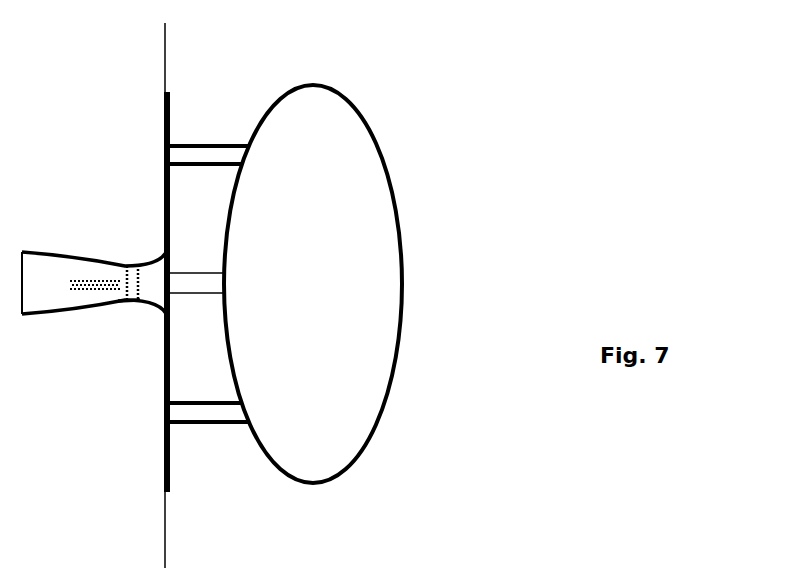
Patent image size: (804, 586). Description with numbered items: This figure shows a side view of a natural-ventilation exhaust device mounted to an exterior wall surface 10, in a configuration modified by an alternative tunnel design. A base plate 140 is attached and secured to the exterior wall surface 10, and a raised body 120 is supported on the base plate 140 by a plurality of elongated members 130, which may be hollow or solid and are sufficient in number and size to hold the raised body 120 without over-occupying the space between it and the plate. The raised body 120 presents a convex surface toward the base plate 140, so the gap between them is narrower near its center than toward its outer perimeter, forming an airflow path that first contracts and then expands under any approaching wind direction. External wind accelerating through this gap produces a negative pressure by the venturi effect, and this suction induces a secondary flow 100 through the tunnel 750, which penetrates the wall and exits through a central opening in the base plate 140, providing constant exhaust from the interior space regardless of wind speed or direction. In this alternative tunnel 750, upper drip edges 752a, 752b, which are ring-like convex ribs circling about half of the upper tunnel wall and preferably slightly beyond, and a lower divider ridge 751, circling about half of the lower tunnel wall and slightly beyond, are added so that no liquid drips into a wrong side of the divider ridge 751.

The exterior wall surface 10 is at (171, 51).
The secondary flow 100 is at (116, 290).
The raised body 120 is at (313, 284).
The elongated members 130 is at (213, 141).
The base plate 140 is at (170, 455).
The tunnel 750 is at (58, 290).
The lower divider ridge 751 is at (130, 305).
The upper drip edge 752a is at (138, 262).
The upper drip edge 752b is at (123, 262).